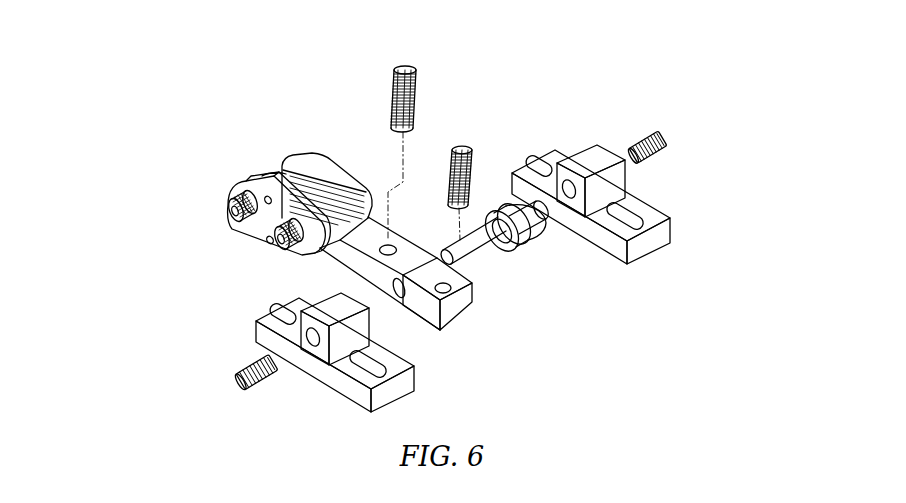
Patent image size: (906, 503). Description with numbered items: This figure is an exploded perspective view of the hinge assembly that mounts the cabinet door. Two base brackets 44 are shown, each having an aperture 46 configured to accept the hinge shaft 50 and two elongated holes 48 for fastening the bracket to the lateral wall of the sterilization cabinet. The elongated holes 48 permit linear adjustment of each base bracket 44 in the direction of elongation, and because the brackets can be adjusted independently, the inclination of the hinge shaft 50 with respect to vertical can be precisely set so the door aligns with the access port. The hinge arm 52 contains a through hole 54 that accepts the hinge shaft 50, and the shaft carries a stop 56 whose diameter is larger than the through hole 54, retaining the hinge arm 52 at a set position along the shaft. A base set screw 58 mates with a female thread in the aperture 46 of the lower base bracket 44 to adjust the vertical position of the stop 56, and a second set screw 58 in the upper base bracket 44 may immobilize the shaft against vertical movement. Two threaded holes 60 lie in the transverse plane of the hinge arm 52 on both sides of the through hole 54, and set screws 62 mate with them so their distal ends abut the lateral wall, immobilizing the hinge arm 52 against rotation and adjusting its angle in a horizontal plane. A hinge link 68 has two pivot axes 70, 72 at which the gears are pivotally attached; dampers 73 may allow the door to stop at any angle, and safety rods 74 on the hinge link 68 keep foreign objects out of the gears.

The base bracket 44 is at (612, 150).
The aperture 46 is at (567, 185).
The elongated hole 48 is at (637, 217).
The hinge shaft 50 is at (481, 255).
The hinge arm 52 is at (458, 320).
The through hole 54 is at (398, 292).
The stop 56 is at (521, 248).
The base set screw 58 is at (663, 134).
The threaded hole 60 is at (397, 250).
The set screw 62 is at (460, 148).
The hinge link 68 is at (303, 155).
The pivot axis 70 is at (283, 238).
The pivot axis 72 is at (233, 215).
The damper 73 is at (277, 175).
The safety rod 74 is at (310, 172).